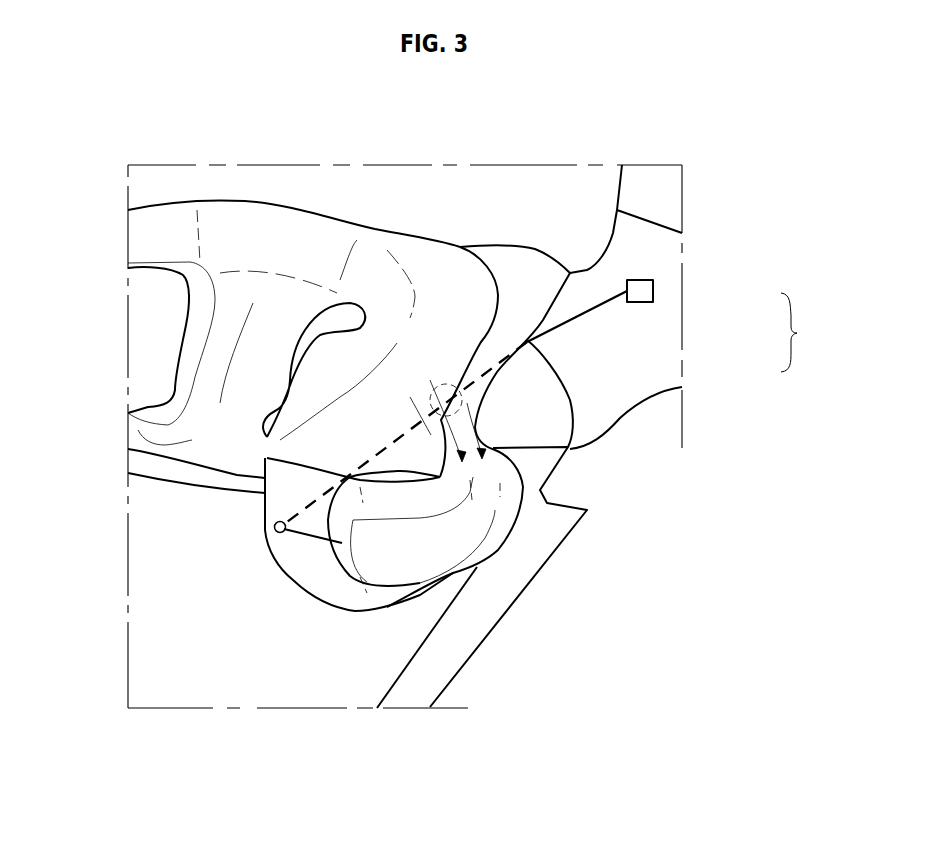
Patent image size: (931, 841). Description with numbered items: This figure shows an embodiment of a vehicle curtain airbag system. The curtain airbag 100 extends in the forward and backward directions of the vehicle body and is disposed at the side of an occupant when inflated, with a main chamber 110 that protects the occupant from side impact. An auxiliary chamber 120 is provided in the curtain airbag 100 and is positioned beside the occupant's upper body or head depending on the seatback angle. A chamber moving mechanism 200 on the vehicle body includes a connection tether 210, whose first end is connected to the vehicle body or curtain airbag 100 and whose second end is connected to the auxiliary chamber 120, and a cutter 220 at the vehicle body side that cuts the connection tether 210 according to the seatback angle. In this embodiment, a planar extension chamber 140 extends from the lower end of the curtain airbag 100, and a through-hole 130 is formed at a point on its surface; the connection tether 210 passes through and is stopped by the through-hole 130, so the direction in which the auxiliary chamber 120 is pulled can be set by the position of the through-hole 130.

The curtain airbag 100 is at (262, 192).
The main chamber 110 is at (436, 300).
The auxiliary chamber 120 is at (455, 535).
The through-hole 130 is at (265, 518).
The planar extension chamber 140 is at (317, 563).
The chamber moving mechanism 200 is at (812, 332).
The connection tether 210 is at (440, 400).
The cutter 220 is at (653, 291).